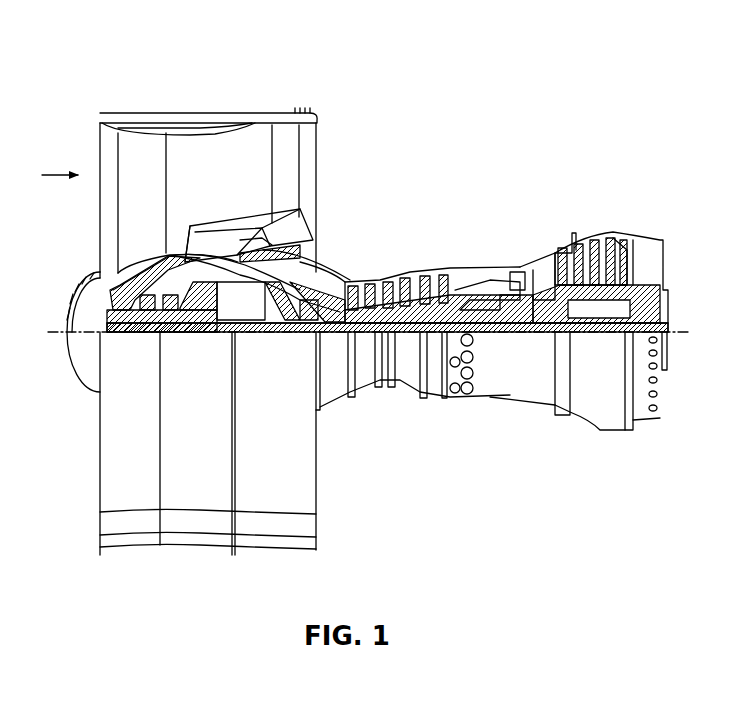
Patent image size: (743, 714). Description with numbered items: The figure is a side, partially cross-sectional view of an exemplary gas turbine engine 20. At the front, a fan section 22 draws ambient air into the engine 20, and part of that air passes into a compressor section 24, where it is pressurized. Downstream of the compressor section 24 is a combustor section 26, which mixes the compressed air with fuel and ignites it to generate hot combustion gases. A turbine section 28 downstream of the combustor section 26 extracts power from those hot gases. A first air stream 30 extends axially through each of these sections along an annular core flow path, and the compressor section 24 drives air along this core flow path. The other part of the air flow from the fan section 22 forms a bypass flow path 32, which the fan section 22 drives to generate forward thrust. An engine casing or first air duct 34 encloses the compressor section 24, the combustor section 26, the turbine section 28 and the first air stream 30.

The gas turbine engine 20 is at (524, 137).
The fan section 22 is at (228, 83).
The compressor section 24 is at (348, 256).
The combustor section 26 is at (513, 246).
The turbine section 28 is at (634, 217).
The first air stream 30 is at (20, 345).
The bypass flow path 32 is at (48, 176).
The first air duct 34 is at (502, 385).